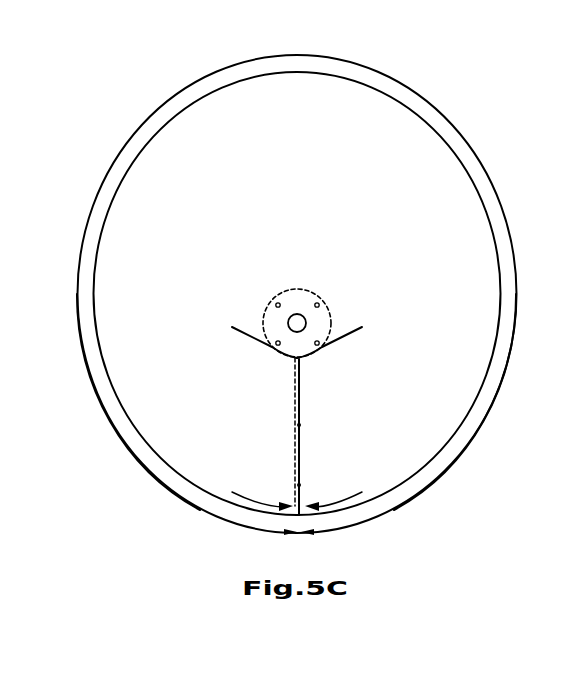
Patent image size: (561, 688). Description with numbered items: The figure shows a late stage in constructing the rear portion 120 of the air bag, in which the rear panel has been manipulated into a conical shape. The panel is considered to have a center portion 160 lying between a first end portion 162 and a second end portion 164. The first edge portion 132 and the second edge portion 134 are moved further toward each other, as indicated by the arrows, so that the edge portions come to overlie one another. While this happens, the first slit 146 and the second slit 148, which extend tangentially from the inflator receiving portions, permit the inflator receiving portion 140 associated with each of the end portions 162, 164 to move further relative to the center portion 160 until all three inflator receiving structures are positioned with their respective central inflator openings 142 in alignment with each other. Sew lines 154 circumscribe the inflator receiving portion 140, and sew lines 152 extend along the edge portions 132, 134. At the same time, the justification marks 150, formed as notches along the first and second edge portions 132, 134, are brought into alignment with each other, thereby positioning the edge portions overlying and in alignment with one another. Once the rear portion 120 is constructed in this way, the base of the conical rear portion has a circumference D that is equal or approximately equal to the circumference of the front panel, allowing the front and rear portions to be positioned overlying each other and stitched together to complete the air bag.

The rear portion 120 is at (104, 100).
The center portion 160 is at (368, 130).
The first end portion 162 is at (215, 410).
The second end portion 164 is at (412, 405).
The inflator receiving portion 140 is at (322, 315).
The central inflator opening 142 is at (297, 314).
The sew lines 154 is at (305, 292).
The first slit 146 is at (253, 341).
The second slit 148 is at (353, 333).
The first edge portion 132 is at (300, 451).
The second edge portion 134 is at (360, 437).
The sew lines 152 is at (295, 468).
The justification marks 150 is at (300, 425).
The circumference D is at (298, 532).